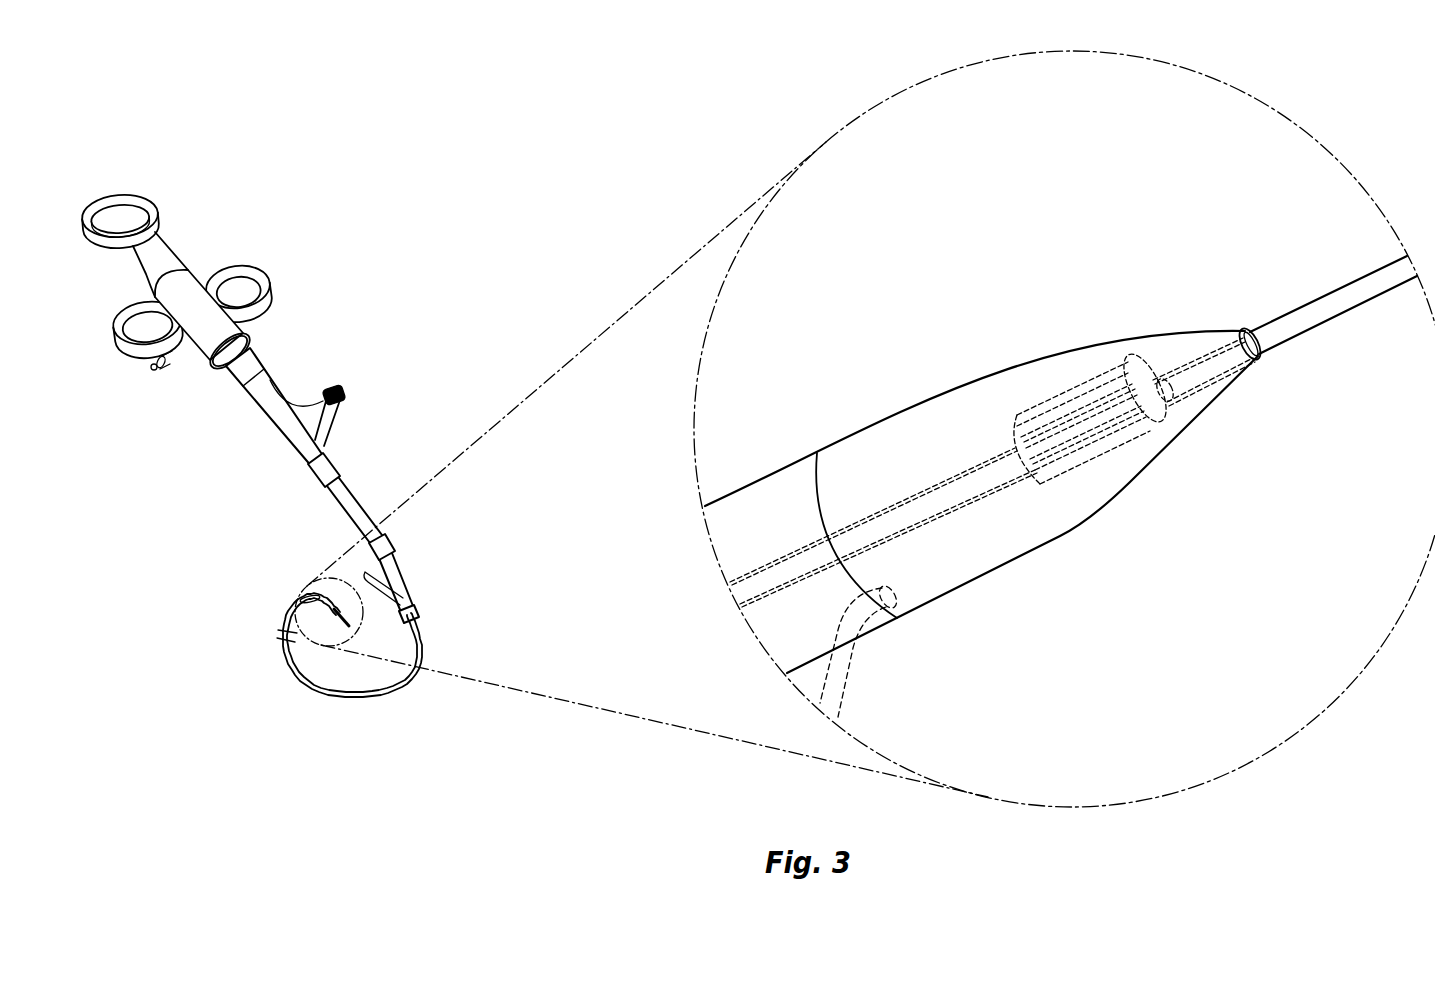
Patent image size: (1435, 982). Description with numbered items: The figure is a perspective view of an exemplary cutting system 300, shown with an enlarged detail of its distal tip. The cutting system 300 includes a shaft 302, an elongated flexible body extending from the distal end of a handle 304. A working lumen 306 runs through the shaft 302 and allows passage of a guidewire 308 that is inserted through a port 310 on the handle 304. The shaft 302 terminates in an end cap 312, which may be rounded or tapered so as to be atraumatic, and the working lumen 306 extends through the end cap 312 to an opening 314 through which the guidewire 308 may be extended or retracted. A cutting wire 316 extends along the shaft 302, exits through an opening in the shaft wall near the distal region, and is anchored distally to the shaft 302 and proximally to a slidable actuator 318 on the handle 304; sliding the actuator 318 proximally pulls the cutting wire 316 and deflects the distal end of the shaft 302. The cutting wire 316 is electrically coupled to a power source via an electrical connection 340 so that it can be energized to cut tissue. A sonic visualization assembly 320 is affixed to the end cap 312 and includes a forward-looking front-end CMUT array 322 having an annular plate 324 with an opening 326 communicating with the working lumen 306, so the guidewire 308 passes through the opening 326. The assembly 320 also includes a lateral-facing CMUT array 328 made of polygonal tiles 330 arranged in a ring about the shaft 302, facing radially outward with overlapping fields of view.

The cutting system 300 is at (290, 267).
The shaft 302 is at (341, 701).
The handle 304 is at (183, 266).
The working lumen 306 is at (923, 492).
The guidewire 308 is at (1307, 303).
The port 310 is at (345, 397).
The end cap 312 is at (1050, 352).
The opening 314 is at (1262, 358).
The cutting wire 316 is at (311, 608).
The slidable actuator 318 is at (137, 193).
The sonic visualization assembly 320 is at (1142, 449).
The front-end CMUT array 322 is at (1172, 432).
The plate 324 is at (1151, 436).
The opening 326 is at (1186, 434).
The lateral-facing CMUT array 328 is at (1105, 468).
The tiles 330 is at (1055, 487).
The electrical connection 340 is at (170, 378).